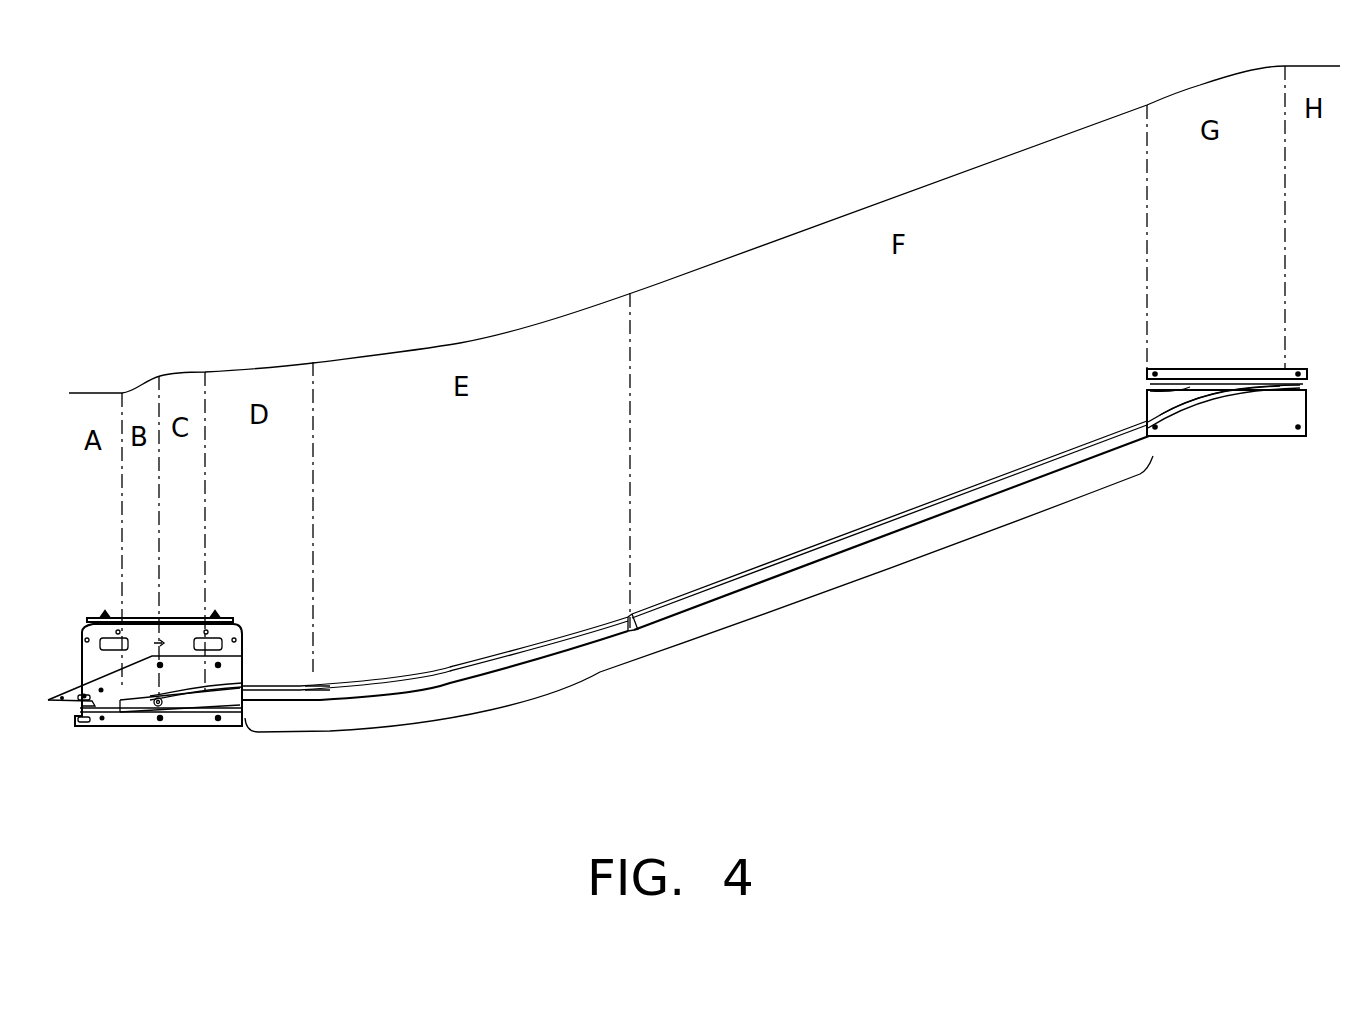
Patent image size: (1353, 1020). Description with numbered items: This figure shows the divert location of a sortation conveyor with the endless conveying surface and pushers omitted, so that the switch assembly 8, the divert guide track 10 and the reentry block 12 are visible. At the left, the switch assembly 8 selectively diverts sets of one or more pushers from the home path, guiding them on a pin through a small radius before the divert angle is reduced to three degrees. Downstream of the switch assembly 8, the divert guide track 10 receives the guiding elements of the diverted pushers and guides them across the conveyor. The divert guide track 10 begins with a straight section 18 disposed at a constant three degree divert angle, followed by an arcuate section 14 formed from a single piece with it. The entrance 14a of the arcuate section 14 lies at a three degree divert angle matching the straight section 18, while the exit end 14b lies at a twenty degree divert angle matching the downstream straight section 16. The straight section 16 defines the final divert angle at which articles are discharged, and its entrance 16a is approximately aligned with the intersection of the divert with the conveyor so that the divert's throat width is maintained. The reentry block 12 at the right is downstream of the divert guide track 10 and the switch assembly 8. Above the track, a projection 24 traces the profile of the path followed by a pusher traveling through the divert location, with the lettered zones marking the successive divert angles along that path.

The switch assembly 8 is at (190, 728).
The divert guide track 10 is at (728, 622).
The reentry block 12 is at (1192, 372).
The arcuate section 14 is at (453, 660).
The entrance 14a is at (317, 682).
The exit end 14b is at (633, 617).
The straight section 16 is at (928, 505).
The entrance 16a is at (613, 622).
The straight section 18 is at (275, 685).
The projection 24 is at (760, 228).